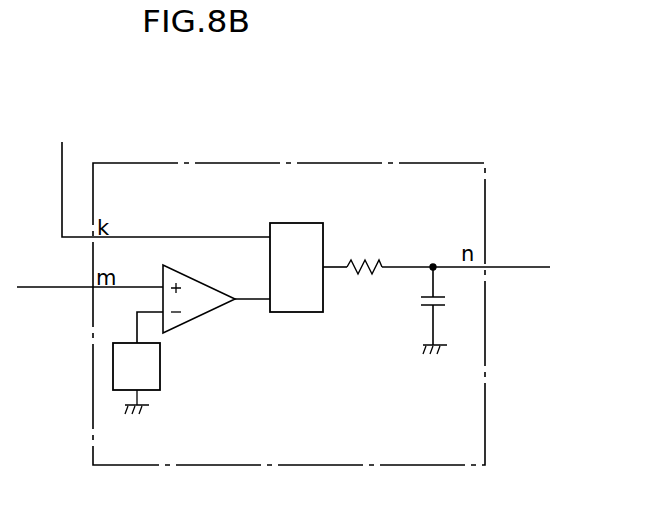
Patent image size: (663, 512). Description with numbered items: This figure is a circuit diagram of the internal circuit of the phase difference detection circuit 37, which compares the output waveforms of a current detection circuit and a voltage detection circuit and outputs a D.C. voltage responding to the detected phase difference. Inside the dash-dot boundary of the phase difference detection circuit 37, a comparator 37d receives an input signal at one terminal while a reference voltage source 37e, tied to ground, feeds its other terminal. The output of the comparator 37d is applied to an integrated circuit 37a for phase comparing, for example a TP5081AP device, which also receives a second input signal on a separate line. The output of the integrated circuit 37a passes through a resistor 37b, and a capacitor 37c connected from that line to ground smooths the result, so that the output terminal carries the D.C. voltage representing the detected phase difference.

The phase difference detection circuit 37 is at (337, 162).
The integrated circuit 37a is at (293, 313).
The resistor 37b is at (372, 253).
The capacitor 37c is at (420, 306).
The comparator 37d is at (193, 322).
The reference voltage source 37e is at (163, 366).